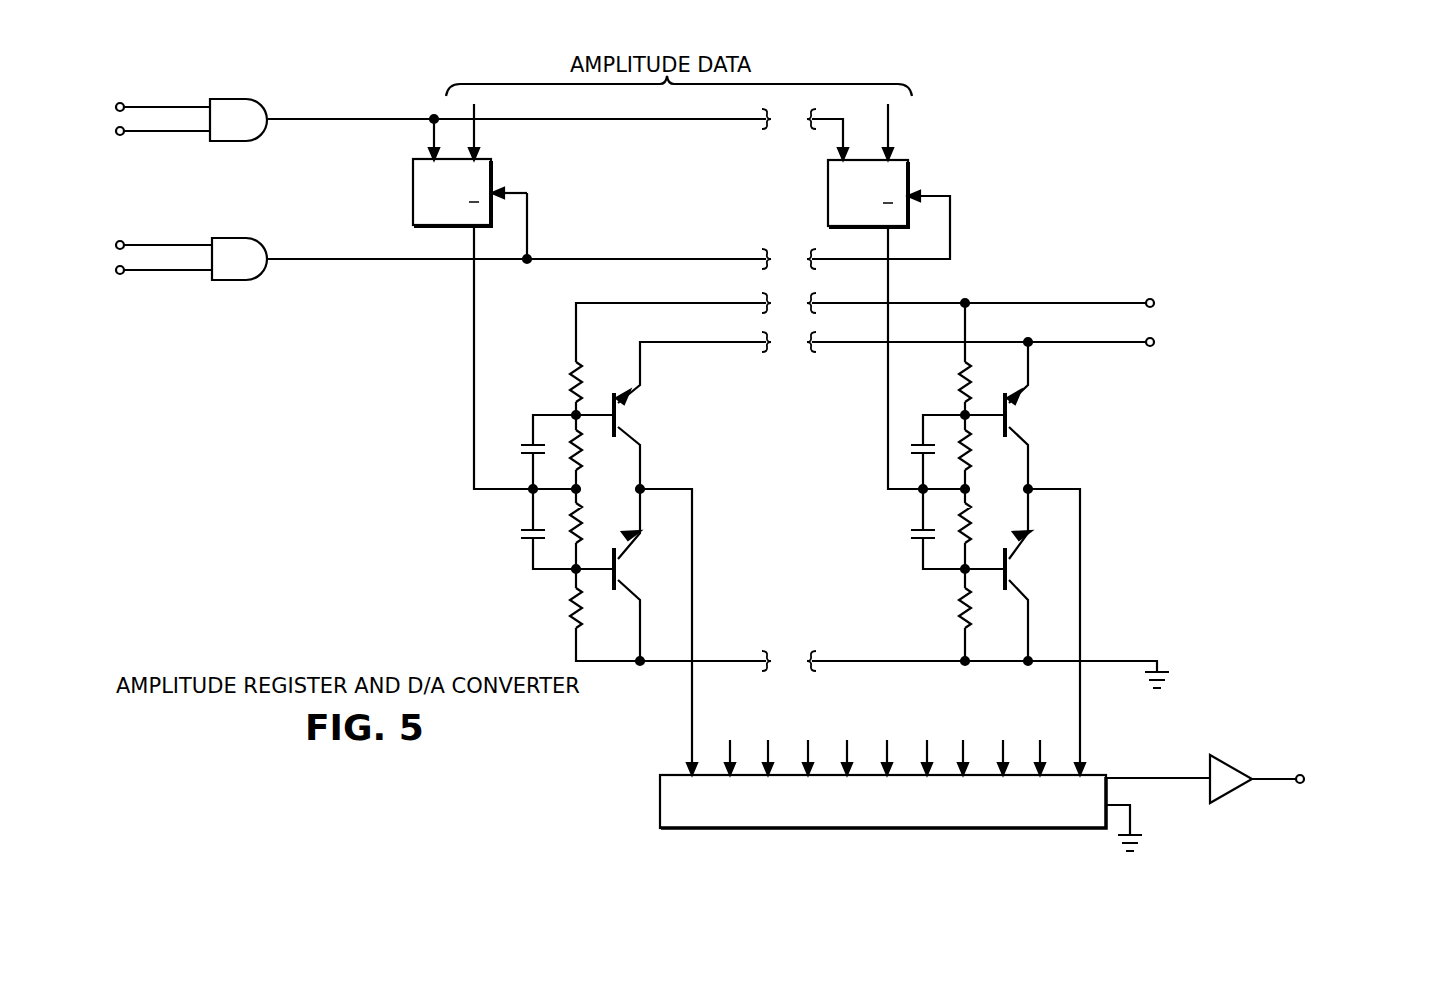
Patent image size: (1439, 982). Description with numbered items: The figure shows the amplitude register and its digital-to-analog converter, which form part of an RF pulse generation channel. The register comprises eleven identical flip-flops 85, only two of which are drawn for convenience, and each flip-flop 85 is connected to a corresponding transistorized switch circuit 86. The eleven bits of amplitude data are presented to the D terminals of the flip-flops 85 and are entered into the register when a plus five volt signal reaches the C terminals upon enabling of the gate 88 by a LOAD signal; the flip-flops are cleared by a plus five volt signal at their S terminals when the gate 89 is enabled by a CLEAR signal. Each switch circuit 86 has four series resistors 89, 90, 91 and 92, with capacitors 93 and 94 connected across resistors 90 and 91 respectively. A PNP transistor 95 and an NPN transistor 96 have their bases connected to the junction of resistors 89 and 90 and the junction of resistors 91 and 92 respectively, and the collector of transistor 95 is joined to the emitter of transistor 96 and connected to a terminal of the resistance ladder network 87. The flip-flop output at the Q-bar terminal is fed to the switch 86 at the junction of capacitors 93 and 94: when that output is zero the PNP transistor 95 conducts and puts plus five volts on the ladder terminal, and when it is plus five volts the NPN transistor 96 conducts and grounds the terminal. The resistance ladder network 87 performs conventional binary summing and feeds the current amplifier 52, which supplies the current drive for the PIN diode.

The gate 88 is at (262, 110).
The gate / series resistor 89 is at (258, 238).
The flip-flop 85 is at (413, 193).
The transistorized switch circuit 86 is at (827, 494).
The capacitor 93 is at (524, 441).
The capacitor 94 is at (519, 530).
The resistor 90 is at (586, 461).
The resistor 91 is at (586, 520).
The resistor 92 is at (586, 612).
The PNP transistor 95 is at (626, 413).
The NPN transistor 96 is at (626, 568).
The resistance ladder network 87 is at (660, 801).
The current amplifier 52 is at (1214, 769).